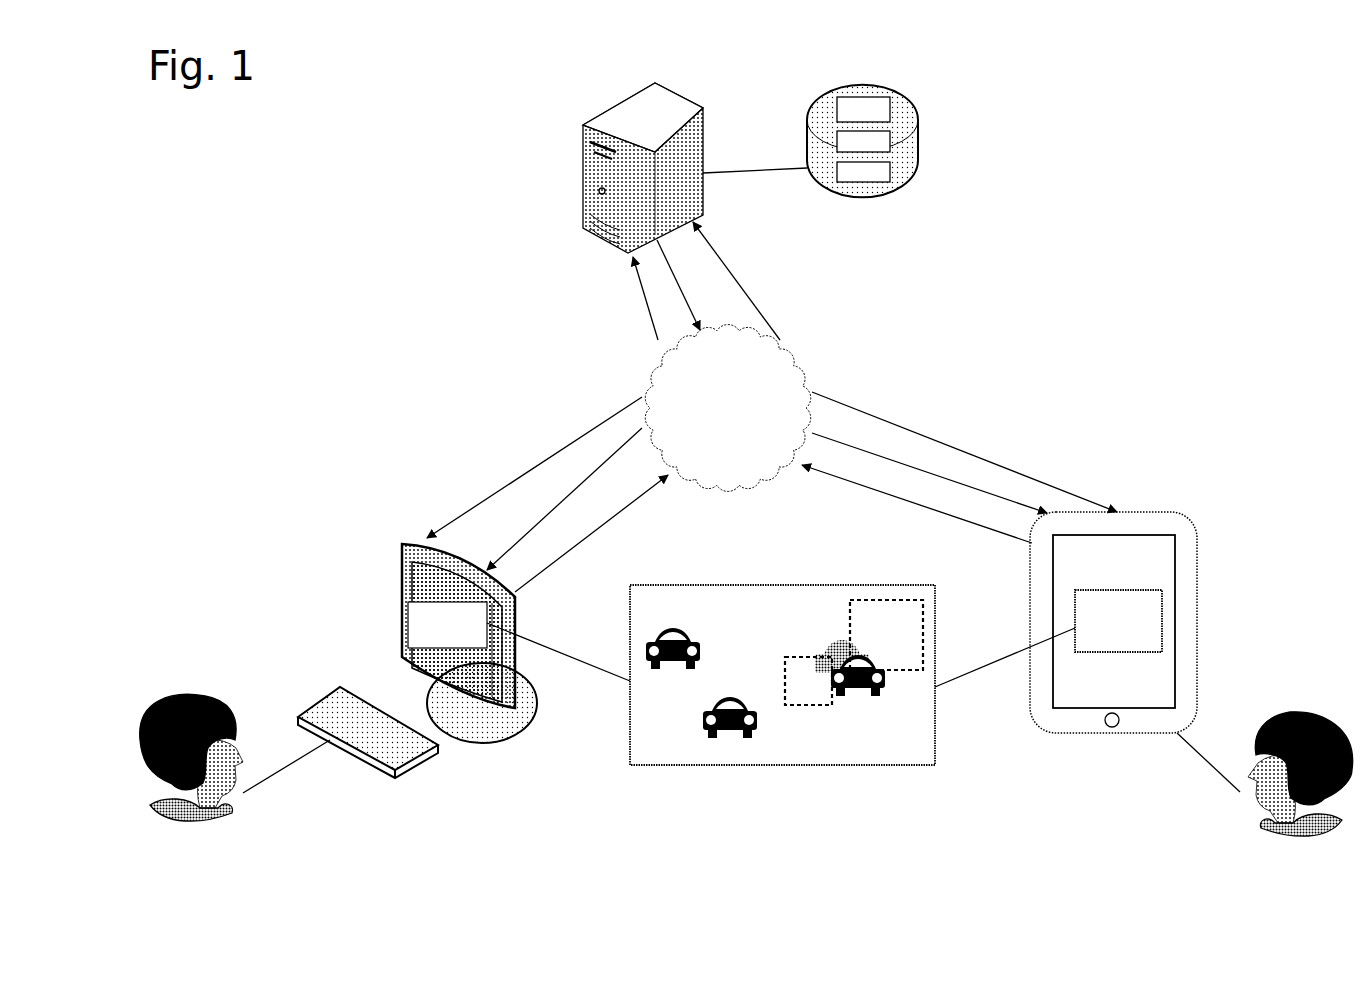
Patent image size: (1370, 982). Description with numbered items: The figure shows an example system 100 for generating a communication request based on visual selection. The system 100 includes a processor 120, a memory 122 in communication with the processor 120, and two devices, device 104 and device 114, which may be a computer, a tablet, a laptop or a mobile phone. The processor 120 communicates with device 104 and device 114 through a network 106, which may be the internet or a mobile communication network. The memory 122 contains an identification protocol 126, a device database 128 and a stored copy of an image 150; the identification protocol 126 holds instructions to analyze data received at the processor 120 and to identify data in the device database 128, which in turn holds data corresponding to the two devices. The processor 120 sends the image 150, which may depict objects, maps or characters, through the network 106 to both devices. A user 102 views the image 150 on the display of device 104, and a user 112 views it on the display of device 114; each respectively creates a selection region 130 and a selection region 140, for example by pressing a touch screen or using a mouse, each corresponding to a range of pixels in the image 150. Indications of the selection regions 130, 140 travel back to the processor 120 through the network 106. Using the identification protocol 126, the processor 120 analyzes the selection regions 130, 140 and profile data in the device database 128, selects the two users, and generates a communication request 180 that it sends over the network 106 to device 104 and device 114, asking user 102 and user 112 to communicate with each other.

The system 100 is at (230, 232).
The user 102 is at (165, 695).
The device 104 is at (513, 740).
The network 106 is at (727, 408).
The user 112 is at (1298, 712).
The device 114 is at (1112, 735).
The processor 120 is at (586, 189).
The memory 122 is at (863, 198).
The identification protocol 126 is at (1008, 80).
The device database 128 is at (982, 138).
The selection region 130 is at (793, 710).
The selection region 140 is at (907, 673).
The image 150 is at (747, 610).
The communication request 180 is at (772, 407).